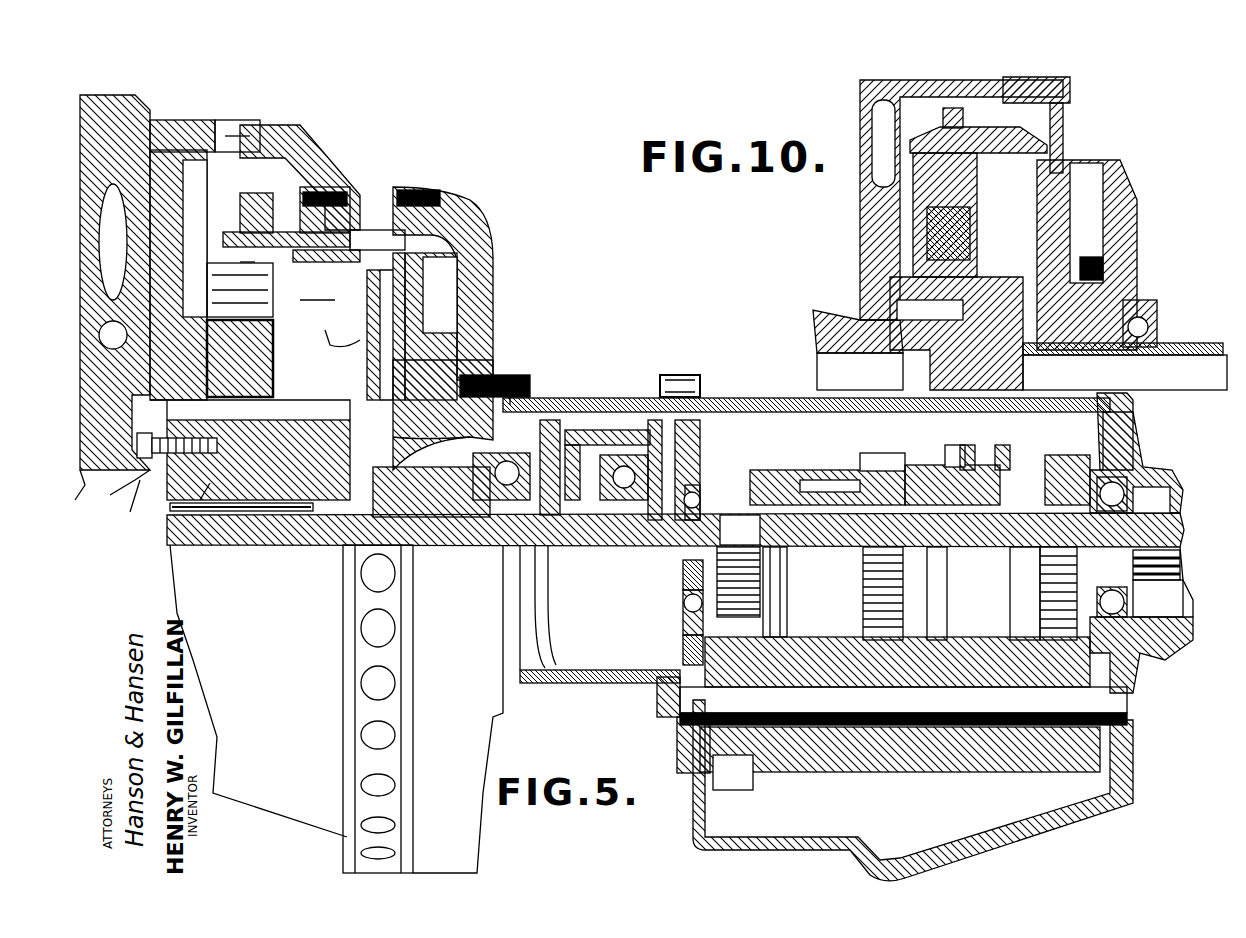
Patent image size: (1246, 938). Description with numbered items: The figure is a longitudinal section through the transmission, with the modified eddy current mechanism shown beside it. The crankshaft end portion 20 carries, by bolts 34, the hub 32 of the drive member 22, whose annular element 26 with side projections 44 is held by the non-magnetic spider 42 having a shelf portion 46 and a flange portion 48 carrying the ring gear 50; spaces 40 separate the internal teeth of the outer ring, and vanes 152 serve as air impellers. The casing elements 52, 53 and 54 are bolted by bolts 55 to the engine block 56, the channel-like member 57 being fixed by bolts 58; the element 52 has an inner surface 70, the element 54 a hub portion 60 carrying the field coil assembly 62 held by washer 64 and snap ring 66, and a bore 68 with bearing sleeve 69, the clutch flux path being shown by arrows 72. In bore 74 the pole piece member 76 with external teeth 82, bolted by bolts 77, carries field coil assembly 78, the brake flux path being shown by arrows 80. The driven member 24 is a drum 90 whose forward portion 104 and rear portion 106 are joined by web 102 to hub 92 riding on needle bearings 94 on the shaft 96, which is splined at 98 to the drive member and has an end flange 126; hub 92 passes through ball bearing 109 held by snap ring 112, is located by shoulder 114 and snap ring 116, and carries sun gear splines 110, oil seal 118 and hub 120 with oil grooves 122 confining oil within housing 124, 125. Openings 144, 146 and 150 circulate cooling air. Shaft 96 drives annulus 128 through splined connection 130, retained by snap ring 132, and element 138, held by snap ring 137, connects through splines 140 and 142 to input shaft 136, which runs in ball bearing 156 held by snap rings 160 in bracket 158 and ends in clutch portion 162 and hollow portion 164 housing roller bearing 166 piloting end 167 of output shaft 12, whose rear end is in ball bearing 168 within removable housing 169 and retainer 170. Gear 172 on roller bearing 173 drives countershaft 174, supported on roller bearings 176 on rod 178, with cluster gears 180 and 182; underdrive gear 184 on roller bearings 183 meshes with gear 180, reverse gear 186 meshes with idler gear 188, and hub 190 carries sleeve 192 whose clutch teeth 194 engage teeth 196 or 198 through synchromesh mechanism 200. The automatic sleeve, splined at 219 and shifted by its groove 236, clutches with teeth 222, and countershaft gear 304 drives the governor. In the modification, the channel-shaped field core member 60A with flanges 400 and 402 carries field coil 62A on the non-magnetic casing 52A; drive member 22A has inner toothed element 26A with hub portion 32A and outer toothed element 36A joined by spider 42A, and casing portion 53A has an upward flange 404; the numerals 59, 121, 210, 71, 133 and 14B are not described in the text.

In FIG. 5, the crankshaft end portion 20 is at (125, 490).
In FIG. 5, the drive member 22 is at (250, 450).
In FIG. 5, the output shaft 12 is at (1185, 530).
In FIG. 5, the openings 144 is at (385, 685).
In FIG. 5, the central bore 68 is at (175, 380).
In FIG. 5, the washer 64 is at (240, 358).
In FIG. 5, the side projections 44 is at (240, 299).
In FIG. 5, the shelf portion 46 is at (235, 262).
In FIG. 5, the splined connection 140 is at (262, 275).
In FIG. 5, the annular spider 42 is at (262, 290).
In FIG. 5, the forwardly extending portion 104 is at (265, 303).
In FIG. 5, the casing element 54 is at (160, 128).
In FIG. 5, the openings 146 is at (225, 128).
In FIG. 5, the double-ended arrows 72 is at (262, 128).
In FIG. 5, the casing element 52 is at (292, 132).
In FIG. 5, the bolts 55 is at (152, 110).
In FIG. 5, the engine block 56 is at (130, 100).
In FIG. 5, the bolts 58 is at (420, 188).
In FIG. 5, the inner cylindrical surface 70 is at (286, 220).
In FIG. 5, the ring gear 50 is at (165, 188).
In FIG. 5, the shouldered flange portion 48 is at (195, 205).
In FIG. 5, the field coil assembly 62 is at (326, 253).
In FIG. 5, the pin 59 is at (318, 307).
In FIG. 5, the central web 102 is at (367, 327).
In FIG. 5, the field coil assembly 78 is at (478, 320).
In FIG. 5, the double-ended arrows 80 is at (490, 328).
In FIG. 5, the annular channel-like member 57 is at (450, 190).
In FIG. 5, the casing element 53 is at (485, 222).
In FIG. 5, the external teeth 82 is at (431, 326).
In FIG. 5, the rearwardly extending portion 106 is at (441, 282).
In FIG. 5, the drum 90 is at (377, 315).
In FIG. 5, the vanes 152 is at (365, 225).
In FIG. 5, the openings 150 is at (372, 225).
In FIG. 5, the hub portion 60 is at (179, 436).
In FIG. 5, the snap ring 66 is at (264, 427).
In FIG. 5, the bearing sleeve 69 is at (261, 443).
In FIG. 5, the end flange 126 is at (209, 484).
In FIG. 5, the hub 32 is at (210, 525).
In FIG. 5, the splines 98 is at (260, 530).
In FIG. 5, the shaft 96 is at (300, 540).
In FIG. 5, the oil seal 118 is at (414, 492).
In FIG. 5, the forward projecting hub 120 is at (443, 420).
In FIG. 5, the core or pole piece member 76 is at (406, 460).
In FIG. 5, the oil grooves 122 is at (439, 460).
In FIG. 5, the needle bearings 94 is at (410, 515).
In FIG. 5, the hub 92 is at (450, 515).
In FIG. 5, the snap ring 116 is at (510, 515).
In FIG. 5, the bore 74 is at (450, 520).
In FIG. 5, the shoulder 114 is at (472, 525).
In FIG. 5, the gear teeth or splines 110 is at (510, 530).
In FIG. 5, the bolts 77 is at (520, 395).
In FIG. 5, the ball bearing 109 is at (806, 397).
In FIG. 5, the plate 121 is at (630, 400).
In FIG. 5, the snap ring 112 is at (545, 435).
In FIG. 5, the snap ring 137 is at (705, 395).
In FIG. 5, the housing 124 is at (780, 400).
In FIG. 5, the splined connection 130 is at (600, 520).
In FIG. 5, the spaces 40 is at (650, 422).
In FIG. 5, the element 138 is at (702, 450).
In FIG. 5, the annulus 128 is at (721, 453).
In FIG. 5, the ball bearing 156 is at (746, 457).
In FIG. 5, the roller bearing 166 is at (741, 470).
In FIG. 5, the clutch teeth 222 is at (768, 470).
In FIG. 5, the pin 210 is at (785, 470).
In FIG. 5, the cone-shaped clutch portion 162 is at (800, 480).
In FIG. 5, the shift groove 236 is at (855, 465).
In FIG. 5, the splines 219 is at (865, 470).
In FIG. 5, the underdrive gear 184 is at (882, 459).
In FIG. 5, the clutch teeth 196 is at (935, 465).
In FIG. 5, the blocker synchromesh mechanism 200 is at (1050, 450).
In FIG. 5, the clutch teeth 194 is at (975, 445).
In FIG. 5, the manually shiftable sleeve 192 is at (1005, 445).
In FIG. 5, the clutch teeth 198 is at (1065, 467).
In FIG. 5, the reverse gear 186 is at (1086, 440).
In FIG. 5, the removable housing 169 is at (1140, 430).
In FIG. 5, the retainer 170 is at (1145, 460).
In FIG. 5, the ball bearing 168 is at (1170, 492).
In FIG. 5, the hub 190 is at (1000, 525).
In FIG. 5, the roller bearings 183 is at (880, 520).
In FIG. 5, the forward end 167 is at (740, 530).
In FIG. 5, the pin 71 is at (777, 520).
In FIG. 5, the splined connection 142 is at (710, 565).
In FIG. 5, the snap ring 132 is at (608, 578).
In FIG. 5, the ring 133 is at (557, 606).
In FIG. 5, the input shaft 136 is at (613, 592).
In FIG. 5, the hollow portion 164 is at (683, 600).
In FIG. 5, the snap rings 160 is at (683, 622).
In FIG. 5, the bracket 158 is at (683, 645).
In FIG. 5, the countershaft 174 is at (985, 745).
In FIG. 5, the idler gear 188 is at (1145, 655).
In FIG. 5, the housing 125 is at (610, 683).
In FIG. 5, the gear 172 is at (700, 850).
In FIG. 5, the roller bearings 176 is at (800, 713).
In FIG. 5, the rod 178 is at (918, 703).
In FIG. 5, the roller bearing 173 is at (765, 790).
In FIG. 5, the countershaft gear 180 is at (880, 790).
In FIG. 5, the countershaft gear 304 is at (925, 775).
In FIG. 5, the countershaft reverse gear 182 is at (1060, 790).
In FIG. 5, the bolts 34 is at (131, 505).
In FIG. 5, the driven member 24 is at (325, 432).
In FIG. 5, the annular element 26 is at (331, 379).
In FIG. 10, the casing 52A is at (862, 112).
In FIG. 10, the upward flange 404 is at (1065, 115).
In FIG. 10, the outer toothed element 36A is at (1030, 145).
In FIG. 10, the flange 402 is at (913, 170).
In FIG. 10, the annular spider 42A is at (920, 190).
In FIG. 10, the field core member 60A is at (927, 215).
In FIG. 10, the field coil 62A is at (960, 235).
In FIG. 10, the armature 14B is at (900, 258).
In FIG. 10, the flange 400 is at (890, 282).
In FIG. 10, the hub portion 32A is at (880, 295).
In FIG. 10, the drive member 22A is at (960, 328).
In FIG. 10, the casing portion 53A is at (1120, 185).
In FIG. 10, the inner toothed element 26A is at (1100, 235).